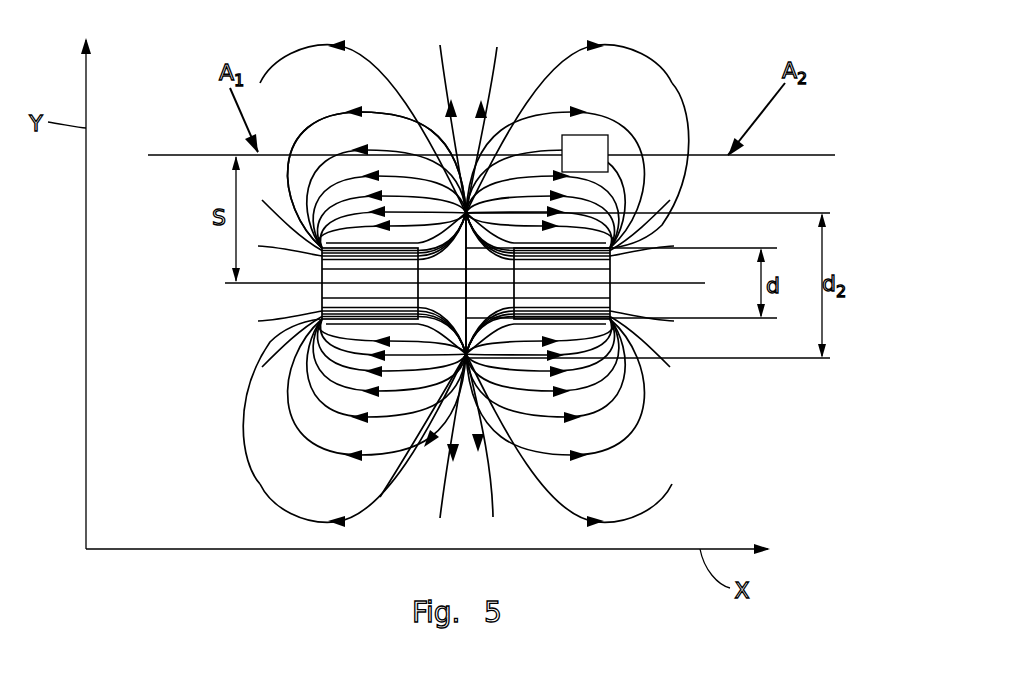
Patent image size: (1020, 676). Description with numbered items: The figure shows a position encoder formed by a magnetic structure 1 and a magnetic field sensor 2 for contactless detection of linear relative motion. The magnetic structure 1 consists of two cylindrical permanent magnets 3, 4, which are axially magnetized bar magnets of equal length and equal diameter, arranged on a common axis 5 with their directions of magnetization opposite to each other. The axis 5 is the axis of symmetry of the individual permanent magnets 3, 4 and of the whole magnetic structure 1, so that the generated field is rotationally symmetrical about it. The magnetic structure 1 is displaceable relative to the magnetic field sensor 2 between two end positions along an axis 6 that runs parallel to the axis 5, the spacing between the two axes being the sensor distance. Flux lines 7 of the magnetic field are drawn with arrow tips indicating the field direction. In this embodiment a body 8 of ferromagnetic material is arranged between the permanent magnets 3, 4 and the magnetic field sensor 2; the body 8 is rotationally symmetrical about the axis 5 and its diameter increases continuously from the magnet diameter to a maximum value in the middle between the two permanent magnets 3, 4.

The magnetic structure 1 is at (685, 360).
The magnetic field sensor 2 is at (593, 147).
The permanent magnet 3 is at (323, 321).
The permanent magnet 4 is at (522, 330).
The axis 5 is at (257, 283).
The axis 6 is at (180, 155).
The flux lines 7 is at (364, 110).
The body 8 is at (525, 390).